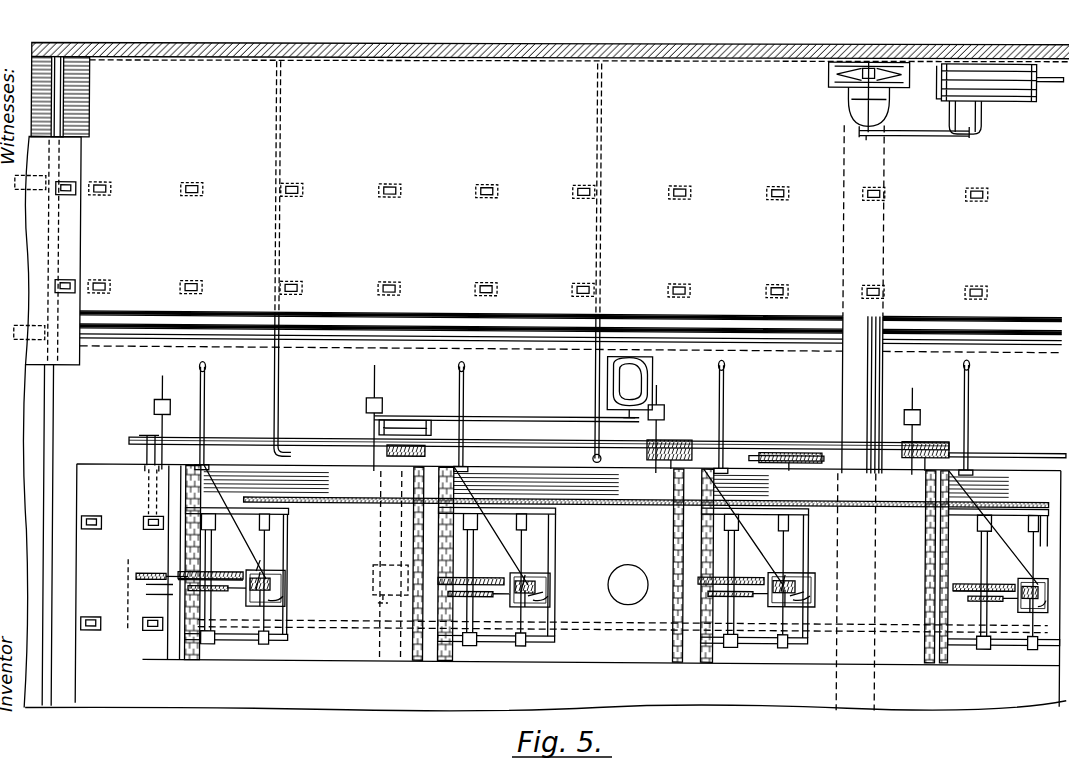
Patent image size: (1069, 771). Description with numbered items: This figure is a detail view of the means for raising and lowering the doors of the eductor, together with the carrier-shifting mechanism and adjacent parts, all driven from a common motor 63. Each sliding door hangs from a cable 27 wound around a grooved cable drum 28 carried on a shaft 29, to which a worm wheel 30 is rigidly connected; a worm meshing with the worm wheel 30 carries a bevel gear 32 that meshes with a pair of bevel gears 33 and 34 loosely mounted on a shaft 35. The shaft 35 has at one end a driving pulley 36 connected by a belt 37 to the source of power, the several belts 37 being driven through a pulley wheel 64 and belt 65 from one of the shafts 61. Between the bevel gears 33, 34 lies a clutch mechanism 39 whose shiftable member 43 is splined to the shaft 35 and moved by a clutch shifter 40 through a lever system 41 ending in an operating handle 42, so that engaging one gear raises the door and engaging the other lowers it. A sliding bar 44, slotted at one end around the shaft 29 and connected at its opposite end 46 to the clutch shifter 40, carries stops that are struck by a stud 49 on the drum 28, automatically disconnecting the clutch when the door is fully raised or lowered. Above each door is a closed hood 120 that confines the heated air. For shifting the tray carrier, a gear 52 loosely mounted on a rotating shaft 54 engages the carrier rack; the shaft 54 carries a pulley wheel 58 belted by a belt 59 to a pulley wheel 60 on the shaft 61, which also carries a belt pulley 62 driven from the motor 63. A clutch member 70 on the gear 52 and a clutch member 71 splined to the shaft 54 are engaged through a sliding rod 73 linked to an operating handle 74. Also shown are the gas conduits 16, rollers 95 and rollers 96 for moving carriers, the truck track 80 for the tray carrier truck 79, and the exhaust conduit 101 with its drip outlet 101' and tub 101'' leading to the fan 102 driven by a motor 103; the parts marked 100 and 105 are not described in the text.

The conduit 16 is at (279, 396).
The cable 27 is at (162, 604).
The grooved cable wheel or drum 28 is at (478, 573).
The shaft 29 is at (210, 643).
The worm wheel 30 is at (222, 591).
The bevel gear 32 is at (255, 557).
The bevel gear 33 is at (274, 579).
The bevel gear 34 is at (285, 603).
The shaft 35 is at (266, 643).
The driving wheel or pulley 36 is at (262, 496).
The belt 37 is at (345, 498).
The clutch mechanism 39 is at (285, 594).
The clutch shifter 40 is at (288, 577).
The lever system 41 is at (215, 491).
The operating handle 42 is at (206, 395).
The shiftable member 43 is at (262, 571).
The sliding member or bar 44 is at (964, 549).
The end of bar 46 is at (540, 577).
The stud or projection 49 is at (240, 571).
The gear 52 is at (148, 571).
The rotating shaft 54 is at (150, 502).
The pulley wheel 58 is at (142, 429).
The belt 59 is at (226, 436).
The pulley wheel 60 is at (432, 430).
The shaft 61 is at (425, 454).
The belt pulley 62 is at (374, 414).
The motor 63 is at (638, 354).
The pulley wheel 64 is at (804, 447).
The belt 65 is at (772, 449).
The clutch member 70 is at (150, 587).
The clutch member 71 is at (160, 596).
The sliding rod 73 is at (160, 483).
The operating handle 74 is at (166, 389).
The tray carrier truck 79 is at (48, 250).
The truck track 80 is at (45, 408).
The rollers 95 is at (191, 195).
The rollers 96 is at (92, 615).
The motor 100 is at (999, 83).
The conduit 101 is at (762, 571).
The drip outlet 101' is at (838, 97).
The tank or tub 101'' is at (876, 132).
The fan or exhauster 102 is at (840, 77).
The motor 103 is at (982, 110).
The bracket 105 is at (385, 563).
The hood 120 is at (182, 511).